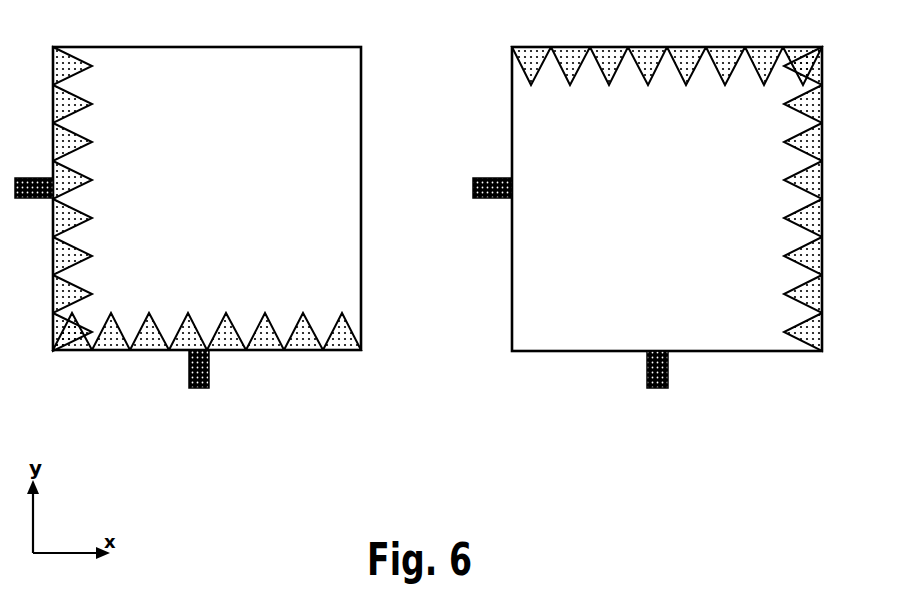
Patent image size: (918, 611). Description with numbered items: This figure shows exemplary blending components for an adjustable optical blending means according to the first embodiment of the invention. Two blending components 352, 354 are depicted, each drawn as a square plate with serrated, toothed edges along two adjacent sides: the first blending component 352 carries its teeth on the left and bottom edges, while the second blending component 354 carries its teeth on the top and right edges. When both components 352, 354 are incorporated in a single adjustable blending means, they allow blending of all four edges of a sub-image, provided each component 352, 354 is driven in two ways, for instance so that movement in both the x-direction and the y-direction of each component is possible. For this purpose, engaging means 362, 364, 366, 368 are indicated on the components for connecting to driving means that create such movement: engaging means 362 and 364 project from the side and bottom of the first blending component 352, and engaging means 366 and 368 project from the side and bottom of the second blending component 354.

The blending component 352 is at (361, 82).
The blending component 354 is at (822, 62).
The engaging means 362 is at (37, 199).
The engaging means 364 is at (188, 366).
The engaging means 366 is at (490, 199).
The engaging means 368 is at (646, 369).